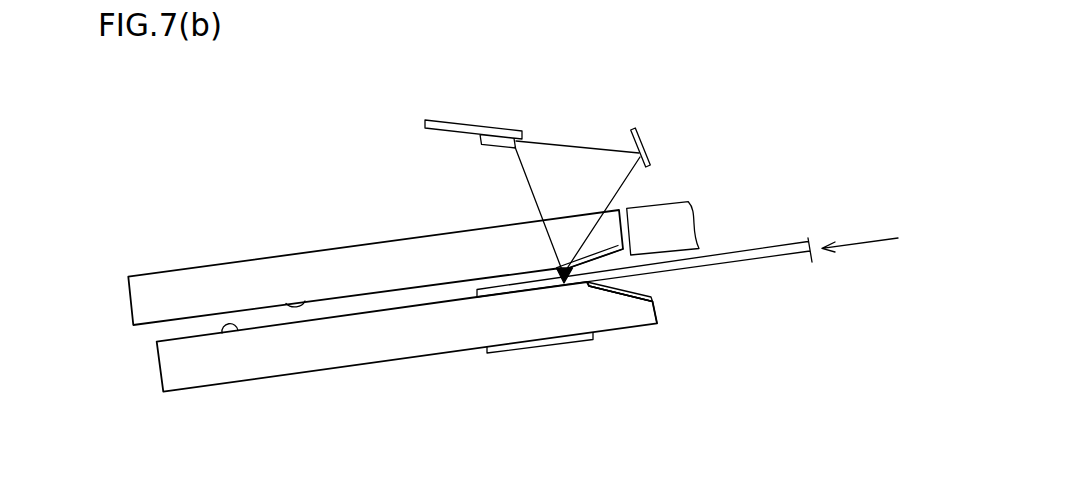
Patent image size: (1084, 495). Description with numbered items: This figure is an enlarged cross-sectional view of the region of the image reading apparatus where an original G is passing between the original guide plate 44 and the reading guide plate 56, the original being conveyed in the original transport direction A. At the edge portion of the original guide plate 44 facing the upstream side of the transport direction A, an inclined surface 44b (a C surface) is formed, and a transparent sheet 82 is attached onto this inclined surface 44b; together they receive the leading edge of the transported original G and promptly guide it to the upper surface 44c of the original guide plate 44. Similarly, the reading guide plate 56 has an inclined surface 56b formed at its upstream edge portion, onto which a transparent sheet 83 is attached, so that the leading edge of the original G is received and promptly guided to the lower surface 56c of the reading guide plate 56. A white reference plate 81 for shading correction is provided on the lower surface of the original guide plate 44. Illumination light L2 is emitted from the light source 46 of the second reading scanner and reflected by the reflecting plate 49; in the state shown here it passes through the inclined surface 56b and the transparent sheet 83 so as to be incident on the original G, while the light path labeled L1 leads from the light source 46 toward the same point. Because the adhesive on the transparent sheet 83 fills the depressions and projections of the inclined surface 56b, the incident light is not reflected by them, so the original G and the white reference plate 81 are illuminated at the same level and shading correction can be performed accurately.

The original guide plate 44 is at (311, 352).
The inclined surface 44b is at (618, 292).
The upper surface 44c is at (225, 334).
The reading guide plate 56 is at (220, 263).
The inclined surface 56b is at (583, 263).
The lower surface 56c is at (297, 302).
The light source 46 is at (491, 138).
The reflecting plate 49 is at (640, 137).
The white reference plate 81 is at (540, 349).
The transparent sheet 82 is at (627, 285).
The transparent sheet 83 is at (638, 260).
The original G is at (772, 257).
The light beam from light source L1 is at (528, 185).
The illumination light L2 is at (624, 182).
The original transport direction A is at (873, 242).